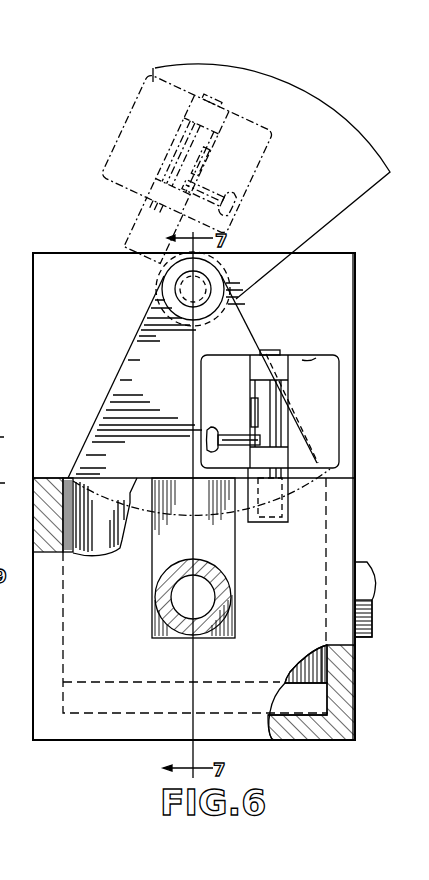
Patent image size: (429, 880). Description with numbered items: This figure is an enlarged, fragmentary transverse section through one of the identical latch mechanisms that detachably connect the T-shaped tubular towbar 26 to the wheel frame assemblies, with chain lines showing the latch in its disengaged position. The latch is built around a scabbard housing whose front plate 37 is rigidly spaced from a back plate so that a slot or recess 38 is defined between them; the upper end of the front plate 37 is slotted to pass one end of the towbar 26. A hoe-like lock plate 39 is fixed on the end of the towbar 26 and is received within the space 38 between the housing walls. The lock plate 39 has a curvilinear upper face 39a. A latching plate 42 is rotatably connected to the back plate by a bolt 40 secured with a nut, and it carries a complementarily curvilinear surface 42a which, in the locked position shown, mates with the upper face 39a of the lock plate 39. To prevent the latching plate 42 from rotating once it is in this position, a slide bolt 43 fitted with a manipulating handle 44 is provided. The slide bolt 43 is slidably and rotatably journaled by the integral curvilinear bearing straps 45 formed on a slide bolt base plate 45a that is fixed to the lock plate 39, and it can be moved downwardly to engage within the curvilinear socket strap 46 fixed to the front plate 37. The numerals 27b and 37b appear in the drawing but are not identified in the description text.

The towbar 26 is at (167, 606).
The stop member 27b is at (363, 576).
The front plate 37 is at (335, 552).
The support bar 37b is at (150, 573).
The slot or recess 38 is at (295, 707).
The lock plate 39 is at (316, 690).
The curvilinear upper face 39a is at (178, 508).
The bolt 40 is at (160, 294).
The latching plate 42 is at (171, 393).
The curvilinear surface 42a is at (90, 484).
The slide bolt 43 is at (267, 410).
The manipulating handle 44 is at (214, 453).
The bearing straps 45 is at (283, 457).
The slide bolt base plate 45a is at (305, 362).
The socket strap 46 is at (270, 523).